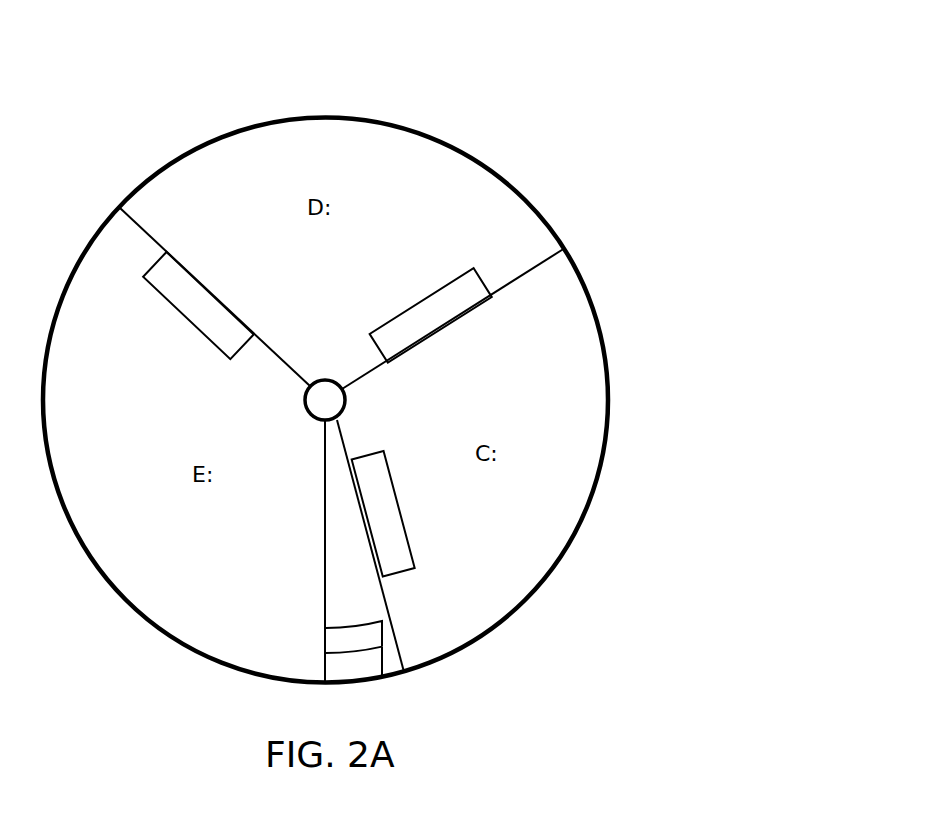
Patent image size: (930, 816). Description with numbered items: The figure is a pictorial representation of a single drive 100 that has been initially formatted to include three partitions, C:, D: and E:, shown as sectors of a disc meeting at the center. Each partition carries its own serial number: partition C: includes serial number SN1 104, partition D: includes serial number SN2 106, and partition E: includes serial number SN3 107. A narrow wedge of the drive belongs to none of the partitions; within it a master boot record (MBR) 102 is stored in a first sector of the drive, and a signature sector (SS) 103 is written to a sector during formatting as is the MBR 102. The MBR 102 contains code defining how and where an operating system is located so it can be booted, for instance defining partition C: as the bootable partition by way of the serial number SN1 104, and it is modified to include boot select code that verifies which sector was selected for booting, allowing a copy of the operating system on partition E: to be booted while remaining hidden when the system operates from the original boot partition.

The single drive 100 is at (478, 68).
The master boot record (MBR) 102 is at (382, 665).
The signature sector (SS) 103 is at (350, 626).
The serial number SN1 104 is at (410, 549).
The serial number SN2 106 is at (422, 298).
The serial number SN3 107 is at (173, 317).